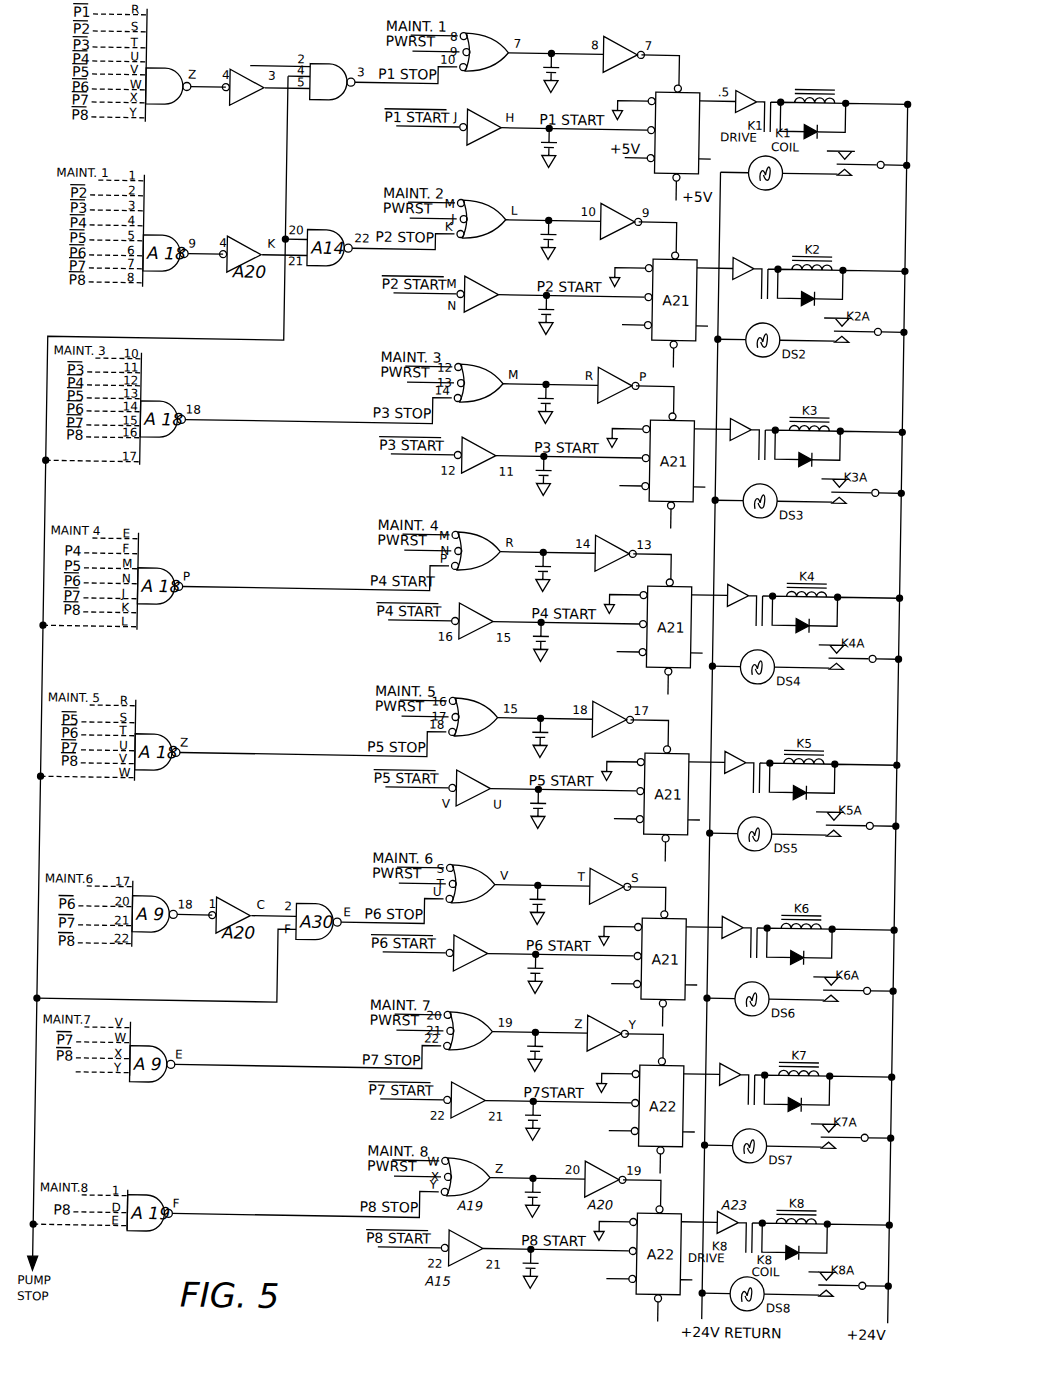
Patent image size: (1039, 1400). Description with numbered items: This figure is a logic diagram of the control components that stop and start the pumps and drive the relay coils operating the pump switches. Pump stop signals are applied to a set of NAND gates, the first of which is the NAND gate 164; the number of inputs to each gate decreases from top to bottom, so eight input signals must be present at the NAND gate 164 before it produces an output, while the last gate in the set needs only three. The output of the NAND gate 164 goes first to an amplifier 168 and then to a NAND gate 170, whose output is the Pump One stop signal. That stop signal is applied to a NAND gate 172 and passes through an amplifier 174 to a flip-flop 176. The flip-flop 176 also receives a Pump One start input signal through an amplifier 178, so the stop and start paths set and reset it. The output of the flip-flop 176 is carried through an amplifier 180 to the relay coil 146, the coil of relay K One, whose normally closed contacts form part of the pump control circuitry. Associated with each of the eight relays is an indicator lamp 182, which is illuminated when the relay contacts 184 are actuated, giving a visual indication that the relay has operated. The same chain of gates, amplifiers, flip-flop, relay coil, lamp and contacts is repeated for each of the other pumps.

The NAND gate 164 is at (173, 72).
The amplifier 168 is at (250, 110).
The NAND gate 170 is at (327, 65).
The NAND gate 172 is at (497, 30).
The amplifier 174 is at (612, 52).
The flip-flop 176 is at (700, 87).
The amplifier 178 is at (483, 114).
The amplifier 180 is at (745, 86).
The relay coil 146 is at (833, 94).
The indicator lamp 182 is at (763, 186).
The relay contacts 184 is at (853, 172).